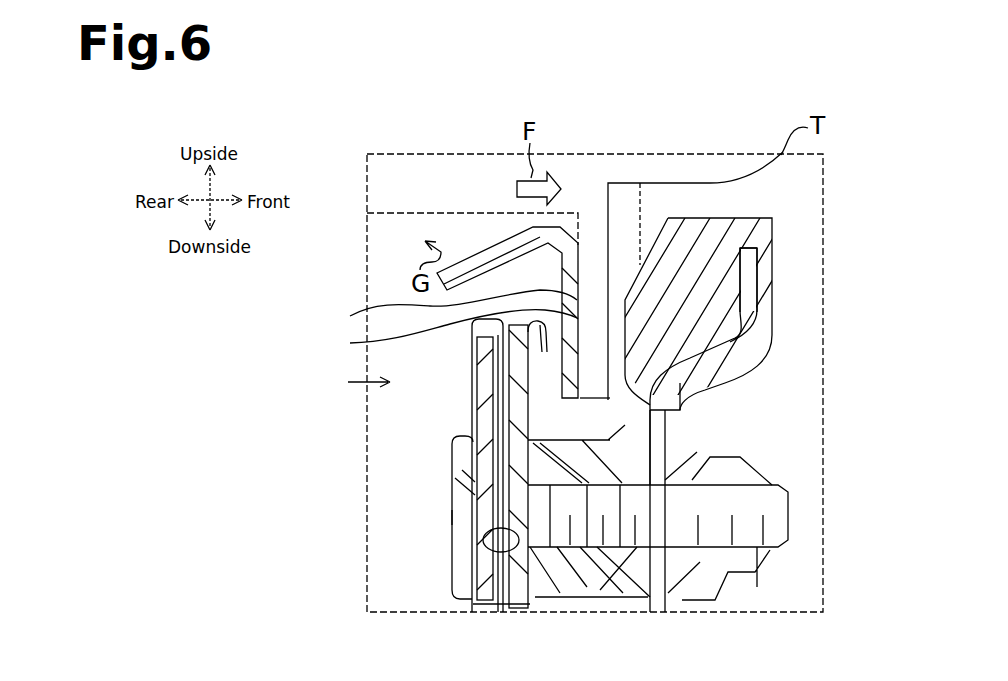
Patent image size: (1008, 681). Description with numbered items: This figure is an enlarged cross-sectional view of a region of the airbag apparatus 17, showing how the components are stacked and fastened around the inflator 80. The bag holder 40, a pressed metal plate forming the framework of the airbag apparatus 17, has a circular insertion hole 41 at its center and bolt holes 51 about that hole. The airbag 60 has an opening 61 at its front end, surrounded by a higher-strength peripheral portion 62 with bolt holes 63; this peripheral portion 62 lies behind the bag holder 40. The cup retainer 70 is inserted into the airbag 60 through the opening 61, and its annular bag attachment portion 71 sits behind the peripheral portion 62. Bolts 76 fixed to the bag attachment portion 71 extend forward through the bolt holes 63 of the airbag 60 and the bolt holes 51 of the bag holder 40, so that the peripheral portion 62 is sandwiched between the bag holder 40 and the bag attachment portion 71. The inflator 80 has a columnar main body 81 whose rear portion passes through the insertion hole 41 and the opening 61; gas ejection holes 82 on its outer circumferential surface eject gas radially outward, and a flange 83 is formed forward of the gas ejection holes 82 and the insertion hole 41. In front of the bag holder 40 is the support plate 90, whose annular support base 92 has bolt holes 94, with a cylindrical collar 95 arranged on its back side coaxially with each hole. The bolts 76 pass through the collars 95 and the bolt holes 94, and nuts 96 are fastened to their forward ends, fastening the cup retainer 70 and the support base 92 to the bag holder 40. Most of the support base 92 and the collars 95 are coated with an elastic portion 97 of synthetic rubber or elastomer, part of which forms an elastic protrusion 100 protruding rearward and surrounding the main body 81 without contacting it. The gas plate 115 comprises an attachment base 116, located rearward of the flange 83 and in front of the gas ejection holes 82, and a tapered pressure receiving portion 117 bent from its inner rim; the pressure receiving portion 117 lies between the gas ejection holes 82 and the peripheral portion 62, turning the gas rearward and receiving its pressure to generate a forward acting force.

The airbag apparatus 17 is at (346, 396).
The bag holder 40 is at (517, 613).
The insertion hole 41 is at (545, 350).
The bolt holes 51 is at (483, 545).
The airbag 60 is at (503, 610).
The opening 61 is at (473, 326).
The peripheral portion 62 is at (480, 420).
The bolt holes 63 is at (455, 490).
The cup retainer 70 is at (400, 650).
The bag attachment portion 71 is at (460, 604).
The bolts 76 is at (452, 518).
The inflator 80 is at (350, 260).
The main body 81 is at (368, 213).
The gas ejection holes 82 is at (470, 212).
The flange 83 is at (612, 228).
The support plate 90 is at (658, 613).
The support base 92 is at (666, 418).
The bolt holes 94 is at (690, 485).
The collar 95 is at (583, 603).
The nuts 96 is at (735, 565).
The elastic portion 97 is at (758, 262).
The elastic protrusion 100 is at (716, 216).
The gas plate 115 is at (300, 305).
The attachment base 116 is at (441, 336).
The pressure receiving portion 117 is at (441, 309).